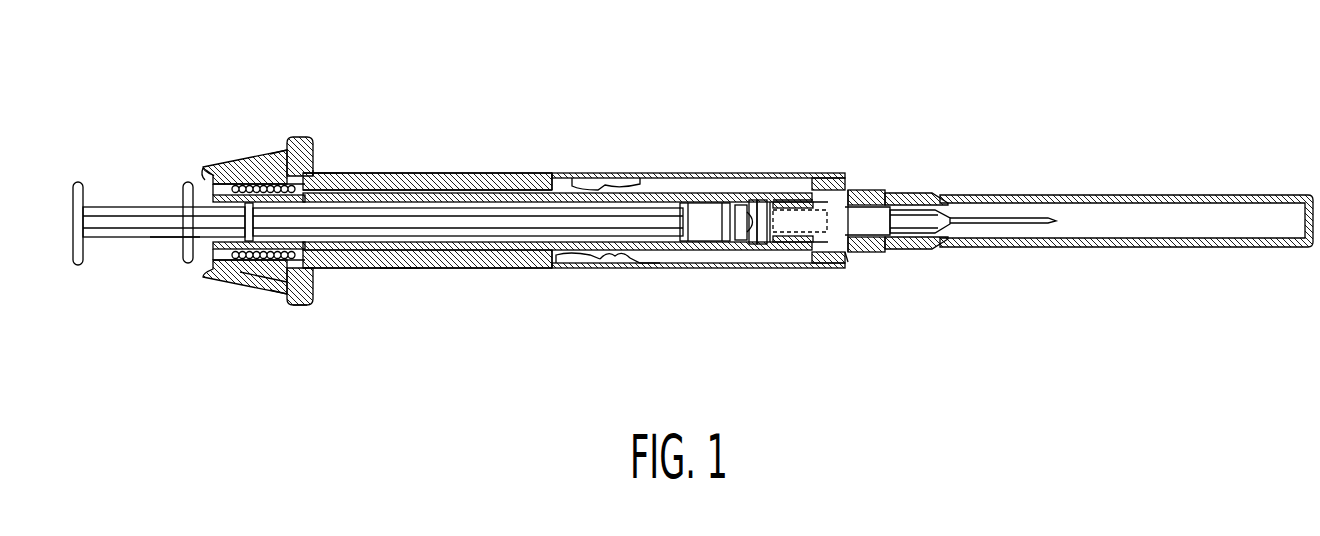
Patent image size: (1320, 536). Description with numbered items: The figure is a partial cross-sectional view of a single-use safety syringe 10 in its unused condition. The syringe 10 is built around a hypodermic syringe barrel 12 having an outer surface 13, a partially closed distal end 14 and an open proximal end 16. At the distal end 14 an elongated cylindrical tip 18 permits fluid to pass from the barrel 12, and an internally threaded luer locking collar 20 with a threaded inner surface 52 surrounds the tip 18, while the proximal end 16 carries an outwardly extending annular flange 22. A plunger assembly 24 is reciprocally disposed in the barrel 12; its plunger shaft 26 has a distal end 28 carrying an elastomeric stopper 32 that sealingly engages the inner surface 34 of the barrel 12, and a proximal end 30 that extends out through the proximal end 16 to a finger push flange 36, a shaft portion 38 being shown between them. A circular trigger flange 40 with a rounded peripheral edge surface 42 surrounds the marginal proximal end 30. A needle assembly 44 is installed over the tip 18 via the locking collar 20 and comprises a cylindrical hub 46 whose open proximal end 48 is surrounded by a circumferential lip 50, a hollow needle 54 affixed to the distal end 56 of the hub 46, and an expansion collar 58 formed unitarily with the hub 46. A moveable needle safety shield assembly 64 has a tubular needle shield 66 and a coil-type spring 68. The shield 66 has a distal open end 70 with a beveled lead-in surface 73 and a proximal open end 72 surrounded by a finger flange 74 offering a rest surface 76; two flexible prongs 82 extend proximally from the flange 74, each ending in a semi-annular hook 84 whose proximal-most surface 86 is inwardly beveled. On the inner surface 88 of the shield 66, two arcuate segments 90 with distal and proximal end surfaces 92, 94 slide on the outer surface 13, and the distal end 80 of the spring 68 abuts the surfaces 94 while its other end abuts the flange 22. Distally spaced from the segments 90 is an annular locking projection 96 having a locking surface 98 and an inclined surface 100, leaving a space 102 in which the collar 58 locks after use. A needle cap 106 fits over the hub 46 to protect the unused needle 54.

The syringe 10 is at (552, 98).
The syringe barrel 12 is at (760, 250).
The outer surface of the syringe barrel 13 is at (372, 173).
The distal end 14 is at (872, 192).
The open proximal end 16 is at (203, 272).
The tip 18 is at (804, 198).
The luer locking collar 20 is at (786, 200).
The annular flange 22 is at (228, 172).
The plunger assembly 24 is at (427, 173).
The plunger shaft 26 is at (476, 193).
The distal end of the plunger shaft 28 is at (716, 194).
The proximal end of the plunger shaft 30 is at (73, 222).
The elastomeric stopper 32 is at (702, 250).
The inner surface of the syringe barrel 34 is at (742, 250).
The finger push flange 36 is at (80, 182).
The plunger shaft 38 is at (180, 242).
The trigger flange 40 is at (183, 198).
The rounded peripheral edge surface 42 is at (203, 178).
The needle assembly 44 is at (857, 262).
The hub 46 is at (912, 195).
The open proximal end of the hub 48 is at (750, 200).
The circumferential lip 50 is at (770, 200).
The threaded inner surface 52 is at (798, 250).
The hollow needle 54 is at (1020, 216).
The distal end of the hub 56 is at (972, 200).
The expansion collar 58 is at (838, 180).
The needle safety shield assembly 64 is at (440, 268).
The tubular needle safety shield 66 is at (495, 268).
The coil-type spring 68 is at (256, 283).
The distal open end of the needle shield 70 is at (850, 268).
The proximal open end of the needle shield 72 is at (296, 138).
The beveled inner lead-in surface 73 is at (850, 188).
The finger flange 74 is at (313, 290).
The surface of the finger flange 76 is at (316, 173).
The distal end of the spring 80 is at (328, 173).
The elastically flexible prongs 82 is at (277, 158).
The semi-annular hook 84 is at (232, 184).
The proximal-most surface of the hook 86 is at (210, 172).
The inner surface of the needle shield 88 is at (655, 173).
The arcuate segments 90 is at (552, 173).
The distal end surfaces of the arcuate segments 92 is at (552, 268).
The proximal end surfaces of the arcuate segments 94 is at (298, 306).
The annular locking projection 96 is at (600, 263).
The locking surface 98 is at (575, 265).
The inclined surface 100 is at (642, 268).
The space 102 is at (590, 178).
The needle cap 106 is at (1118, 195).